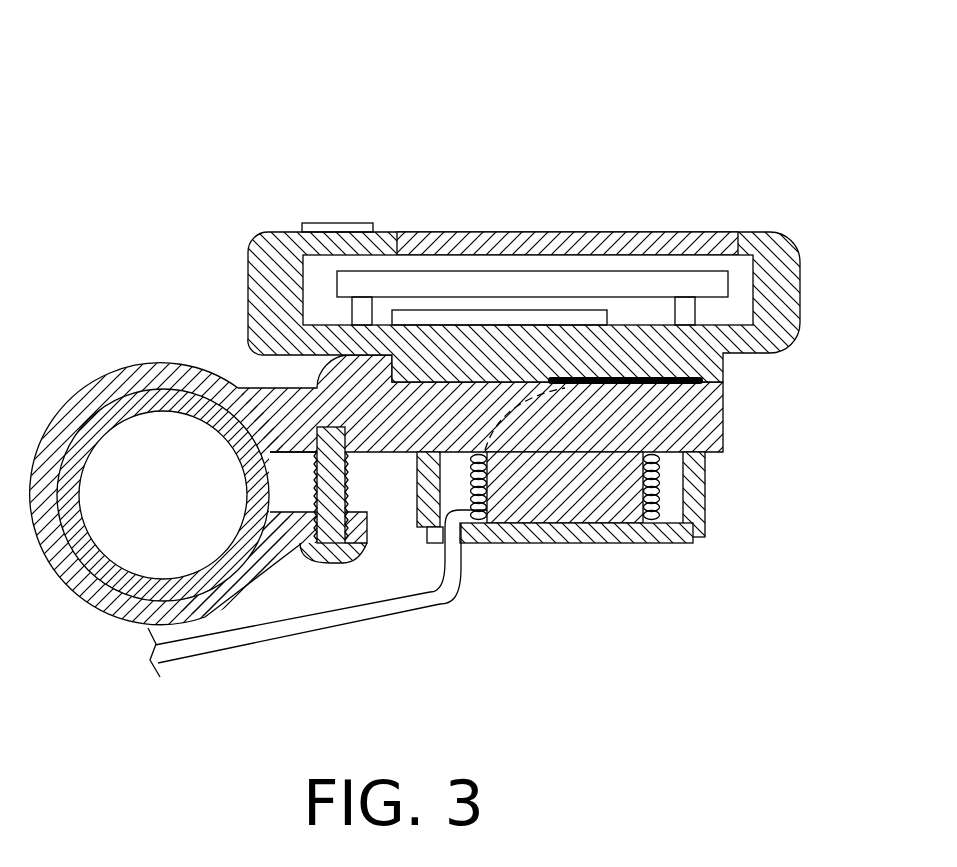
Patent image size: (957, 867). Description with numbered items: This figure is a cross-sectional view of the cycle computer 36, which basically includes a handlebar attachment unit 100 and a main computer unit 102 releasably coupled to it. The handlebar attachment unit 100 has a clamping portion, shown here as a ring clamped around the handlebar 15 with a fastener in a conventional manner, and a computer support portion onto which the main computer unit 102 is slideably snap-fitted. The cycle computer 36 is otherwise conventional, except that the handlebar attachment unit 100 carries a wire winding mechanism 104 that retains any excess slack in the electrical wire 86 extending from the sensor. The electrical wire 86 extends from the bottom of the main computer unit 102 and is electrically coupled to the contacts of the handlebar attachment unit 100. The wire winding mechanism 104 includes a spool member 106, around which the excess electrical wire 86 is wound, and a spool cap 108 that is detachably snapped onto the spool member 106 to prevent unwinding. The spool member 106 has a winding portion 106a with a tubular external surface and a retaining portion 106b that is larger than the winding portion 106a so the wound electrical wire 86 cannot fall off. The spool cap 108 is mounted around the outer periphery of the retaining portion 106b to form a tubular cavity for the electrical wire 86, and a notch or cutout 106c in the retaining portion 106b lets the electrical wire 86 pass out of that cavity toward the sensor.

The cycle computer 36 is at (330, 95).
The handlebar 15 is at (97, 450).
The electrical wire 86 is at (295, 632).
The handlebar attachment unit 100 is at (745, 418).
The main computer unit 102 is at (770, 215).
The wire winding mechanism 104 is at (780, 577).
The spool member 106 is at (661, 562).
The winding portion 106a is at (546, 508).
The retaining portion 106b is at (598, 540).
The notch or cutout 106c is at (431, 550).
The spool cap 108 is at (722, 518).